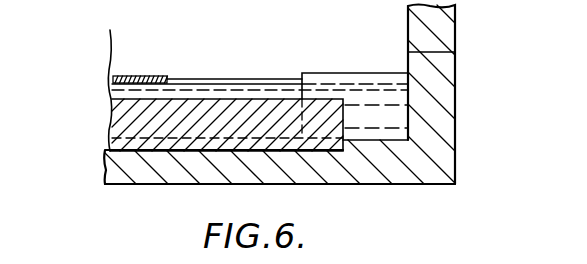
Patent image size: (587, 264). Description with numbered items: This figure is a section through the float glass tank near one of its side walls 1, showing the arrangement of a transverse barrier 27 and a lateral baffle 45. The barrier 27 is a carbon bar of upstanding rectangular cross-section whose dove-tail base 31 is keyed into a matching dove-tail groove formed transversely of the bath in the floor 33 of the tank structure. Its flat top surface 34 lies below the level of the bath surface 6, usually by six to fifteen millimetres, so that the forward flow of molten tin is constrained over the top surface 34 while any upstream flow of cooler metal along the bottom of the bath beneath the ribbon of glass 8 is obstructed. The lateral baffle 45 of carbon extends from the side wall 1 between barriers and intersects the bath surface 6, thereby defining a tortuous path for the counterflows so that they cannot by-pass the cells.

The side wall 1 is at (445, 90).
The bath surface 6 is at (276, 78).
The ribbon of glass 8 is at (175, 77).
The barrier 27 is at (118, 123).
The dove-tail base 31 is at (112, 150).
The floor 33 is at (143, 172).
The top surface 34 is at (116, 96).
The lateral baffle 45 is at (362, 79).